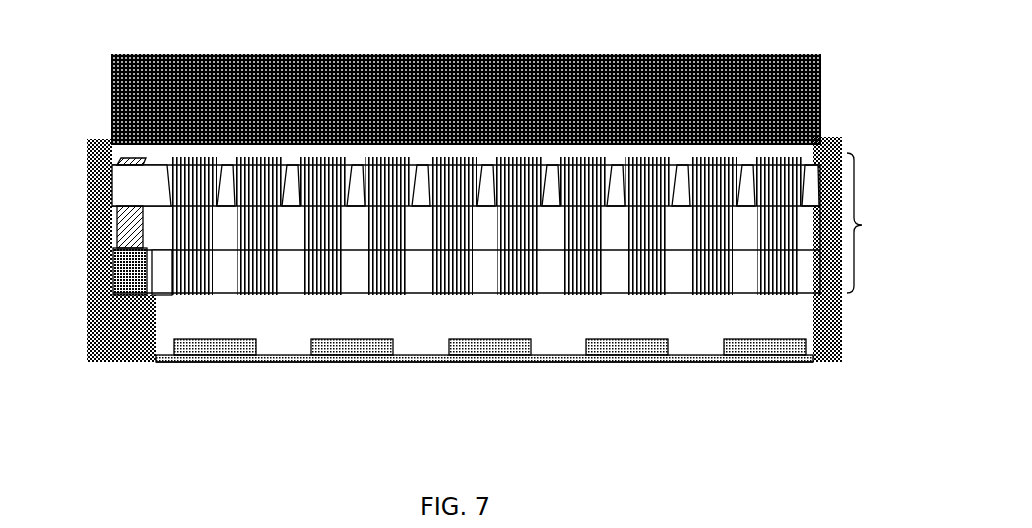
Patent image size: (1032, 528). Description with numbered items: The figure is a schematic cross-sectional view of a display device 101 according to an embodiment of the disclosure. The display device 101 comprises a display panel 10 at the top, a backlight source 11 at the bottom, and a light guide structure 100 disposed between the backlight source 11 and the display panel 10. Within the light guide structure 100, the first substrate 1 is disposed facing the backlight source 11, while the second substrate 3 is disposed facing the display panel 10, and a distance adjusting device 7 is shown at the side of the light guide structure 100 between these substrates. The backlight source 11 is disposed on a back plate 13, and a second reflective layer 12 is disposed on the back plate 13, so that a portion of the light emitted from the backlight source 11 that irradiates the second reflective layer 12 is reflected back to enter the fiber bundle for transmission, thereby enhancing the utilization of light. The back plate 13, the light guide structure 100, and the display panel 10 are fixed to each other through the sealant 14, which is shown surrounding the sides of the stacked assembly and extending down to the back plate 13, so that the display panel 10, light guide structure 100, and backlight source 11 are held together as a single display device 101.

The display device 101 is at (75, 60).
The display panel 10 is at (510, 85).
The sealant 14 is at (433, 249).
The second substrate 3 is at (517, 204).
The distance adjusting device 7 is at (113, 248).
The first substrate 1 is at (517, 318).
The light guide structure 100 is at (876, 223).
The backlight source 11 is at (325, 343).
The second reflective layer 12 is at (484, 387).
The back plate 13 is at (484, 386).